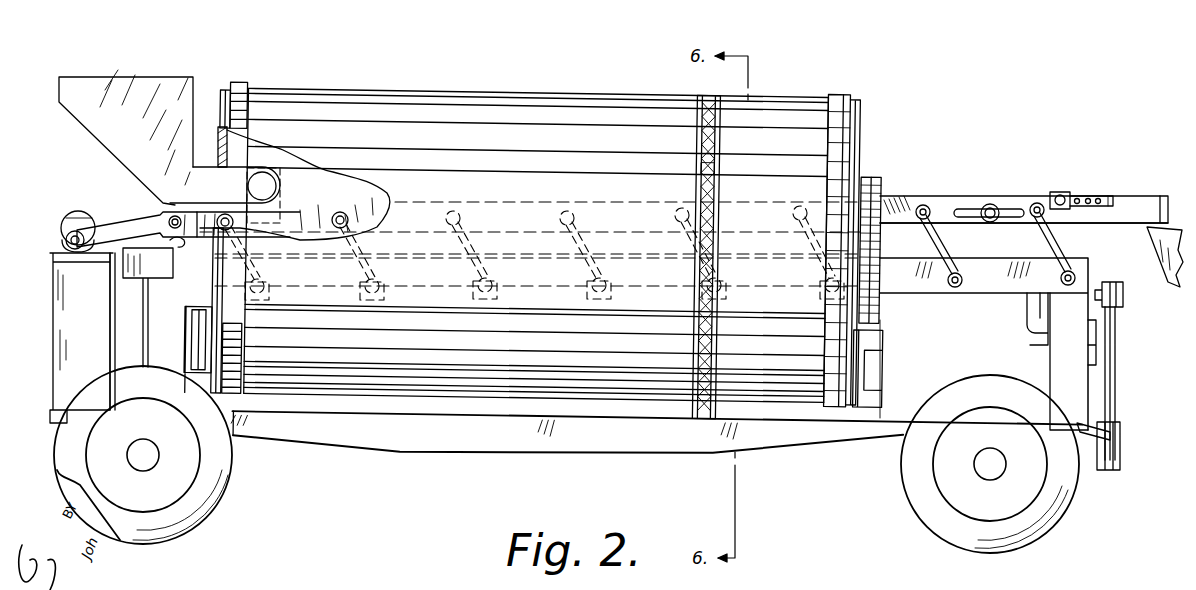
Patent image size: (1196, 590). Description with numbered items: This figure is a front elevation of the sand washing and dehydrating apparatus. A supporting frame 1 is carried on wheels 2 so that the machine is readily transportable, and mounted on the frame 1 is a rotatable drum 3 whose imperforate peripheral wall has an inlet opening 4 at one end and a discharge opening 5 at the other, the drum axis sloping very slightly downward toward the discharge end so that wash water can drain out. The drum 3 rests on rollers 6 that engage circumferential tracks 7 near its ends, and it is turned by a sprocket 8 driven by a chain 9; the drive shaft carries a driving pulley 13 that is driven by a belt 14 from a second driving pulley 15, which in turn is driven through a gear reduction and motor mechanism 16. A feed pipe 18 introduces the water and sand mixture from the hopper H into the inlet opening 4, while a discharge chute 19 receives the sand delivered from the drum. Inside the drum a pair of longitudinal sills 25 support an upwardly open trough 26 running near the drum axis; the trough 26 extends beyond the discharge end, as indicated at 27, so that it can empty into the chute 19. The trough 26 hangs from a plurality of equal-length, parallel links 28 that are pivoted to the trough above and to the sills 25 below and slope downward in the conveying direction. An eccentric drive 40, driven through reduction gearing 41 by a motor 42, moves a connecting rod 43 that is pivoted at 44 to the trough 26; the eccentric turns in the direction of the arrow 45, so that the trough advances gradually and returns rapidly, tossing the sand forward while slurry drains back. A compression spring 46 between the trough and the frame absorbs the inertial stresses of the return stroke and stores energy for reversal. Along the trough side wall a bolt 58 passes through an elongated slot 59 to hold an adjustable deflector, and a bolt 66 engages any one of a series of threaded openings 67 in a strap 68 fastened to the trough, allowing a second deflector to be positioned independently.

The hopper H is at (76, 107).
The supporting frame 1 is at (420, 452).
The wheels 2 is at (200, 522).
The rotatable drum 3 is at (576, 95).
The inlet opening 4 is at (216, 165).
The discharge opening 5 is at (890, 193).
The rollers 6 is at (236, 344).
The circumferential tracks 7 is at (240, 85).
The sprocket 8 is at (708, 88).
The chain 9 is at (720, 163).
The driving pulley 13 is at (1122, 430).
The belt 14 is at (1105, 362).
The driving pulley 15 is at (1125, 298).
The gear reduction and motor mechanism 16 is at (1030, 316).
The feed pipe 18 is at (236, 177).
The discharge chute 19 is at (1152, 240).
The longitudinal sills 25 is at (924, 290).
The trough 26 is at (312, 212).
The trough extension 27 is at (1150, 190).
The links 28 is at (376, 264).
The eccentric drive 40 is at (66, 225).
The reduction gearing 41 is at (94, 218).
The motor 42 is at (78, 214).
The connecting rod 43 is at (118, 240).
The pivot 44 is at (178, 218).
The arrow 45 is at (82, 266).
The compression spring 46 is at (172, 250).
The bolt 58 is at (993, 212).
The elongated slot 59 is at (975, 208).
The bolt 66 is at (1063, 192).
The threaded openings 67 is at (1090, 196).
The strap 68 is at (1103, 197).